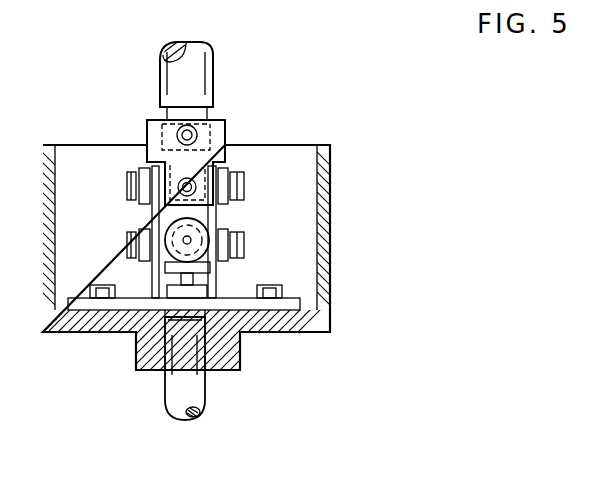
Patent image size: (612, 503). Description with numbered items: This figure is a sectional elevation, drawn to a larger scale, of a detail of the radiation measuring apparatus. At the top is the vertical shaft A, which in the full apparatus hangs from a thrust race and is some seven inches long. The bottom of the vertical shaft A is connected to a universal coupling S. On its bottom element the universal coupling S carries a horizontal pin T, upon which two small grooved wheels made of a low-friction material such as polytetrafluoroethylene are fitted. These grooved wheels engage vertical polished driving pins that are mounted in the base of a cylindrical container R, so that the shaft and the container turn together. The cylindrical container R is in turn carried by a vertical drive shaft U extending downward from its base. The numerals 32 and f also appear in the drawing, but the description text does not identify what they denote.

The vertical shaft A is at (195, 68).
The universal coupling S is at (192, 165).
The horizontal pin T is at (210, 240).
The cylindrical container R is at (330, 273).
The bolts 32 is at (155, 255).
The frame members f is at (160, 275).
The vertical drive shaft U is at (197, 395).